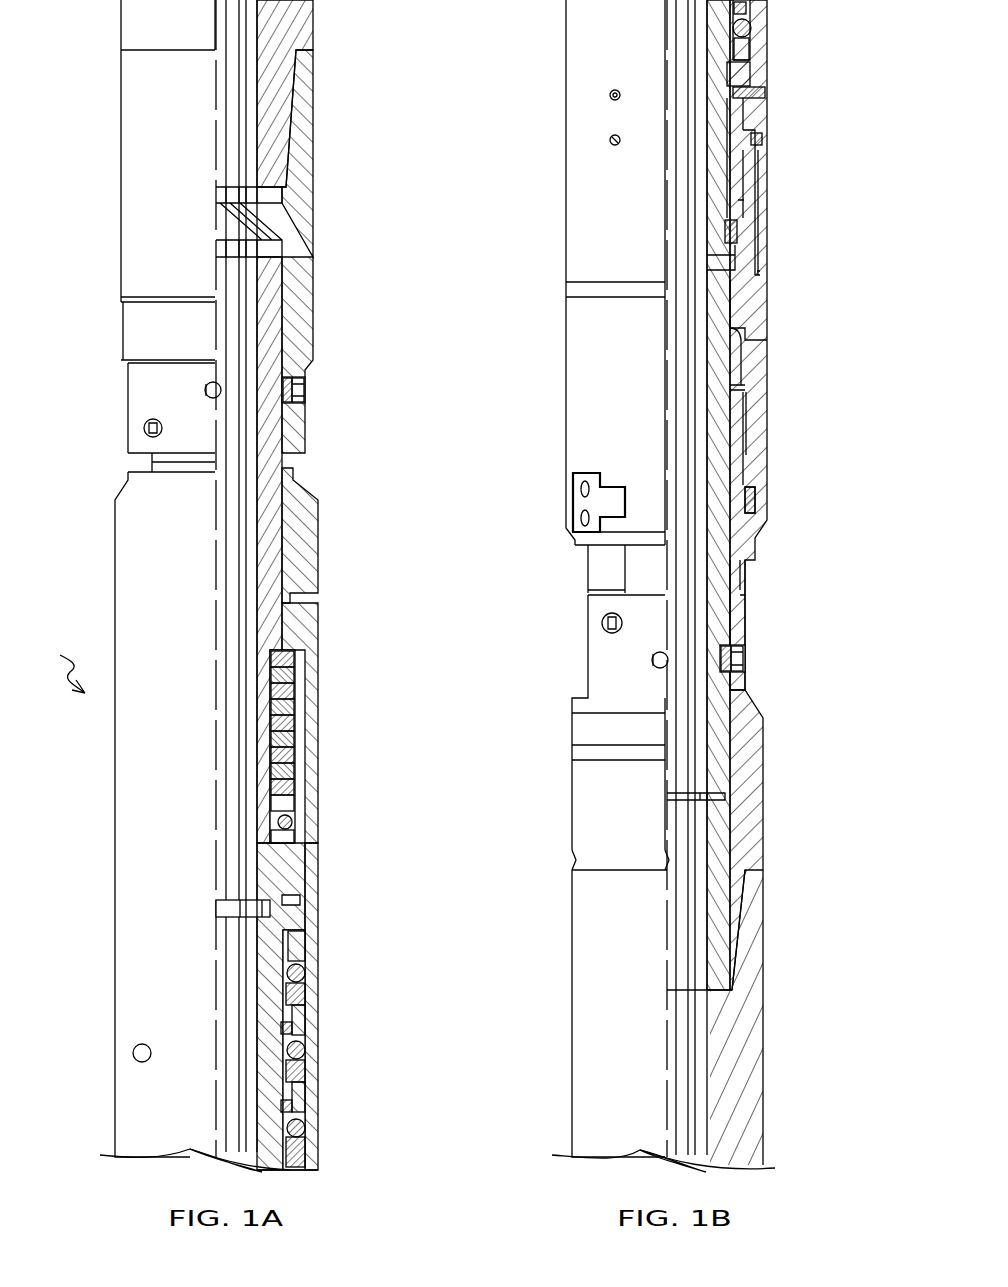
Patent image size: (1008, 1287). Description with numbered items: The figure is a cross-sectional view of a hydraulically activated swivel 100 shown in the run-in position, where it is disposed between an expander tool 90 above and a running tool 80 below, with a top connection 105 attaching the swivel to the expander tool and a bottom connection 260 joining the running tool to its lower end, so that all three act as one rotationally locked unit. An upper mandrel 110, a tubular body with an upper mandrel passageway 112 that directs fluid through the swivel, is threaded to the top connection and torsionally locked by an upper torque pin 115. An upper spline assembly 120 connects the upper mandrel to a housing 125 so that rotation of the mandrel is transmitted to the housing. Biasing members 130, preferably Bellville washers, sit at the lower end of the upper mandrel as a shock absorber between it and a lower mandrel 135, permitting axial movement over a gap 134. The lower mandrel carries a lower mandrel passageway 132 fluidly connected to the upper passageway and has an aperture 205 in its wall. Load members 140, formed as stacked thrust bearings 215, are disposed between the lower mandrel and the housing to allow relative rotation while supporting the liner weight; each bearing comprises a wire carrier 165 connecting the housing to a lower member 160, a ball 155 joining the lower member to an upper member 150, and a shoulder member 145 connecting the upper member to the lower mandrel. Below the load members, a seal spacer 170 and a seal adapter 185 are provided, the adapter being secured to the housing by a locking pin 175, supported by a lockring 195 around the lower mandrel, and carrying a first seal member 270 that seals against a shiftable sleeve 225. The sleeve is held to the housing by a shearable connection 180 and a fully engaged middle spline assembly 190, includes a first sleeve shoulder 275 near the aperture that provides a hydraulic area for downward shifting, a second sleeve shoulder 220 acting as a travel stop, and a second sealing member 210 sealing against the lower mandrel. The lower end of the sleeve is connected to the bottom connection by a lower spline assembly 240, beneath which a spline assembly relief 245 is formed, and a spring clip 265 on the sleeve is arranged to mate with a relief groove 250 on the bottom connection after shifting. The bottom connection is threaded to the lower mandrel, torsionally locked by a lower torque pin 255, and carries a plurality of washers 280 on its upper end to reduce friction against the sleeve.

In FIG. 1B, the running tool 80 is at (738, 1065).
In FIG. 1A, the expander tool 90 is at (300, 22).
In FIG. 1A, the hydraulically activated swivel 100 is at (62, 659).
In FIG. 1A, the top connection 105 is at (305, 143).
In FIG. 1A, the upper mandrel 110 is at (268, 300).
In FIG. 1A, the upper mandrel passageway 112 is at (232, 417).
In FIG. 1A, the upper torque pin 115 is at (302, 394).
In FIG. 1A, the upper spline assembly 120 is at (288, 529).
In FIG. 1A, the housing 125 is at (310, 641).
In FIG. 1A, the biasing members 130 is at (368, 650).
In FIG. 1A, the lower mandrel passageway 132 is at (232, 1022).
In FIG. 1A, the gap 134 is at (230, 907).
In FIG. 1A, the lower mandrel 135 is at (285, 880).
In FIG. 1A, the load members 140 is at (398, 1052).
In FIG. 1A, the shoulder member 145 is at (300, 1028).
In FIG. 1A, the upper member 150 is at (300, 950).
In FIG. 1A, the ball 155 is at (302, 975).
In FIG. 1A, the lower member 160 is at (303, 1010).
In FIG. 1A, the wire carrier 165 is at (303, 1002).
In FIG. 1B, the seal spacer 170 is at (745, 72).
In FIG. 1B, the locking pin 175 is at (758, 93).
In FIG. 1B, the shearable connection 180 is at (760, 138).
In FIG. 1B, the seal adapter 185 is at (752, 158).
In FIG. 1B, the middle spline assembly 190 is at (758, 180).
In FIG. 1B, the lockring 195 is at (737, 230).
In FIG. 1B, the aperture 205 is at (720, 262).
In FIG. 1B, the second sealing member 210 is at (730, 290).
In FIG. 1A, the stacked thrust bearings 215 is at (353, 1126).
In FIG. 1B, the second sleeve shoulder 220 is at (745, 338).
In FIG. 1B, the shiftable sleeve 225 is at (757, 360).
In FIG. 1B, the lower spline assembly 240 is at (745, 418).
In FIG. 1B, the spline assembly relief 245 is at (745, 470).
In FIG. 1B, the relief groove 250 is at (740, 568).
In FIG. 1B, the lower torque pin 255 is at (746, 660).
In FIG. 1B, the bottom connection 260 is at (740, 812).
In FIG. 1B, the spring clip 265 is at (580, 495).
In FIG. 1B, the first seal member 270 is at (740, 205).
In FIG. 1B, the first sleeve shoulder 275 is at (757, 270).
In FIG. 1B, the washers 280 is at (740, 388).